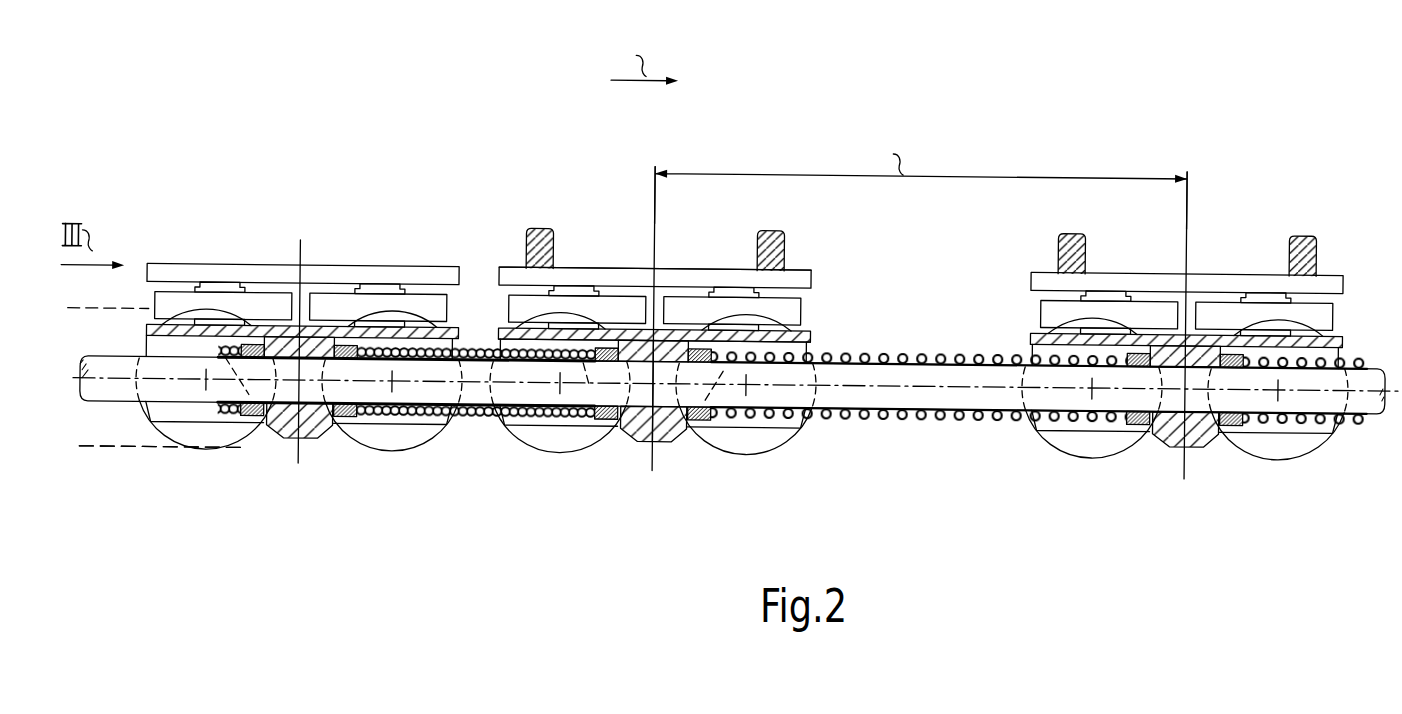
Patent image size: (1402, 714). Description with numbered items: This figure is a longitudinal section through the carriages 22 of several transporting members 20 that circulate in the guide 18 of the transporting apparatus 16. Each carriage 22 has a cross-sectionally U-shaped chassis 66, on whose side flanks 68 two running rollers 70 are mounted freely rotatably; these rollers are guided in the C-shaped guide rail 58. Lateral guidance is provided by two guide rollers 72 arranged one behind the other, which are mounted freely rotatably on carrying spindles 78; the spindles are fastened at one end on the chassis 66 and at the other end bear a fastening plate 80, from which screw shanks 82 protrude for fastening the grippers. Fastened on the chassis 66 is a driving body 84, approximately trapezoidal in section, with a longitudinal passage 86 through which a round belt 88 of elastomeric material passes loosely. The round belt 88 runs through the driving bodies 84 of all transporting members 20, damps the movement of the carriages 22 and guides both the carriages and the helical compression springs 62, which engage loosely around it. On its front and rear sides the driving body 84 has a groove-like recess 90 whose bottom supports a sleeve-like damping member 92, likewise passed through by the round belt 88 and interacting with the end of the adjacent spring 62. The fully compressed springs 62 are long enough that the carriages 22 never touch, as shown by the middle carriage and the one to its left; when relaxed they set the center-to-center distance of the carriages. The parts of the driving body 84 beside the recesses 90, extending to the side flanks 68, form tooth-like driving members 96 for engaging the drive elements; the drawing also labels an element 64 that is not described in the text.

The transporting apparatus 16 is at (730, 290).
The guide 18 is at (162, 492).
The transporting member 20 is at (751, 334).
The carriage 22 is at (745, 248).
The guide rail 58 is at (163, 467).
The helical compression spring 62 is at (742, 419).
The compression spring 64 is at (792, 433).
The chassis 66 is at (744, 315).
The side flank 68 is at (756, 397).
The running roller 70 is at (742, 415).
The guide roller 72 is at (744, 298).
The carrying spindle 78 is at (743, 272).
The fastening plate 80 is at (678, 250).
The screw shank 82 is at (897, 233).
The driving body 84 is at (741, 440).
The passage 86 is at (646, 428).
The round belt 88 is at (736, 421).
The groove-like recess 90 is at (695, 336).
The damping member 92 is at (742, 427).
The driving member 96 is at (522, 438).